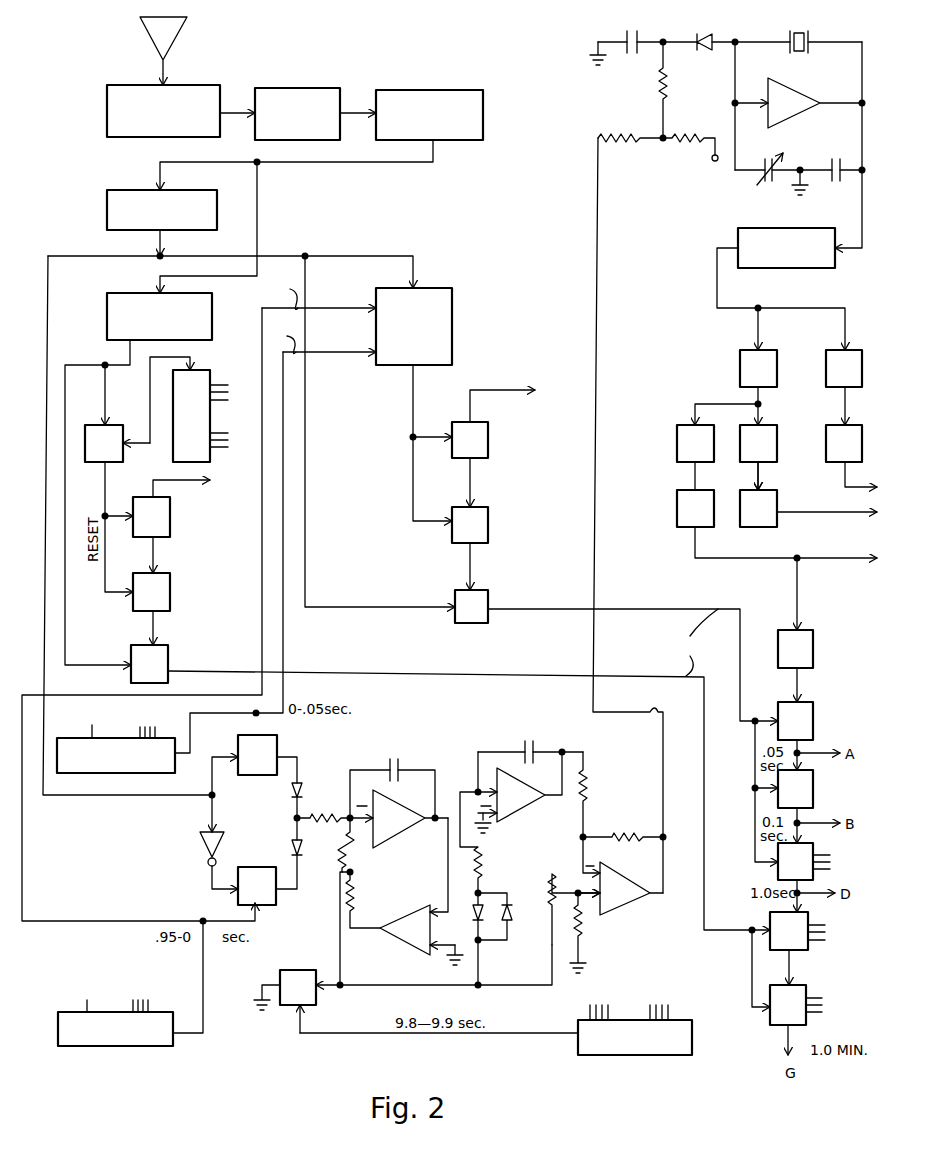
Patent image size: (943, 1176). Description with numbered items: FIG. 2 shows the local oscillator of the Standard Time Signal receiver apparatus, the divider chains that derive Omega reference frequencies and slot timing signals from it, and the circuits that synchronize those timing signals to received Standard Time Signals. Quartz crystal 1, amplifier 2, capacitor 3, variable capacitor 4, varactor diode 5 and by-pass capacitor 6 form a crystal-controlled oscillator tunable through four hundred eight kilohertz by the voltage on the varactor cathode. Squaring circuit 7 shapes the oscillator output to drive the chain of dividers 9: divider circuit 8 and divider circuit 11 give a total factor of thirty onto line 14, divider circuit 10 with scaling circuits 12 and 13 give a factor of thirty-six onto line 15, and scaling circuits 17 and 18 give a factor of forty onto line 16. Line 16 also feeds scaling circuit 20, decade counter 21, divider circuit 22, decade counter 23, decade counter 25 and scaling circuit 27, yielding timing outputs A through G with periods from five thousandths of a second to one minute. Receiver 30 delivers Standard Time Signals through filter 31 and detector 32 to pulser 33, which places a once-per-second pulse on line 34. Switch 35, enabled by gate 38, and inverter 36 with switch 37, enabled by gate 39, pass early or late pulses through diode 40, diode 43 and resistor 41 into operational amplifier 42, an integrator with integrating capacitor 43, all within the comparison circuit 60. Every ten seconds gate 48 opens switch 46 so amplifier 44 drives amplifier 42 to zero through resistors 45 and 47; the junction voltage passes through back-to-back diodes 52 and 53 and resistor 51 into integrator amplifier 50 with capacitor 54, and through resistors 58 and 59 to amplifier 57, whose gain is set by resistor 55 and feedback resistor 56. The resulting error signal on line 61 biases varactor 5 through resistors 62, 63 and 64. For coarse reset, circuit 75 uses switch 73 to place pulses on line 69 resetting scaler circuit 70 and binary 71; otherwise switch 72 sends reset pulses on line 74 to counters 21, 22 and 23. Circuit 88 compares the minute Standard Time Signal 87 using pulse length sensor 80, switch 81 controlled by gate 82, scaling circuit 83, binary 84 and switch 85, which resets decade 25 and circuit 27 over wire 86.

The quartz crystal 1 is at (805, 45).
The amplifier 2 is at (798, 100).
The capacitor 3 is at (835, 163).
The variable capacitor 4 is at (763, 160).
The varactor diode 5 is at (705, 54).
The capacitor 6 is at (638, 56).
The squaring circuit 7 is at (757, 232).
The divider circuit 8 is at (862, 357).
The chain of dividers 9 is at (725, 384).
The divider circuit 10 is at (768, 355).
The divider circuit 11 is at (862, 430).
The scaling circuit 12 is at (768, 430).
The scaling circuit 13 is at (764, 497).
The line 14 is at (846, 484).
The line 15 is at (812, 514).
The line 16 is at (797, 580).
The scaling circuit 17 is at (680, 433).
The scaling circuit 18 is at (680, 500).
The scaling circuit 20 is at (813, 636).
The decade counter 21 is at (813, 712).
The divider circuit 22 is at (813, 783).
The decade counter 23 is at (813, 852).
The decade counter 25 is at (808, 922).
The scaling circuit 27 is at (806, 990).
The receiver 30 is at (108, 113).
The filter 31 is at (331, 92).
The detector 32 is at (455, 97).
The pulser 33 is at (112, 192).
The line 34 is at (381, 258).
The switch 35 is at (272, 748).
The inverter 36 is at (220, 848).
The switch 37 is at (240, 903).
The gate 38 is at (72, 720).
The gate 39 is at (62, 1034).
The diode 40 is at (303, 788).
The resistor 41 is at (324, 815).
The operational amplifier 42 is at (392, 810).
The diode and integrating capacitor 43 is at (303, 856).
The amplifier 44 is at (410, 942).
The resistor 45 is at (356, 905).
The switch 46 is at (310, 978).
The resistor 47 is at (358, 845).
The gate 48 is at (664, 1056).
The amplifier 50 is at (536, 808).
The resistor 51 is at (482, 858).
The diode 52 is at (510, 925).
The diode 53 is at (474, 914).
The capacitor 54 is at (532, 750).
The resistor 55 is at (588, 780).
The feedback resistor 56 is at (628, 836).
The amplifier 57 is at (638, 905).
The resistor 58 is at (548, 922).
The resistor 59 is at (586, 940).
The phase comparison circuit 60 is at (414, 861).
The line 61 is at (598, 228).
The resistor 62 is at (618, 130).
The resistor 63 is at (668, 92).
The resistor 64 is at (706, 116).
The line 69 is at (414, 418).
The scaler circuit 70 is at (488, 448).
The binary 71 is at (488, 528).
The switch 72 is at (476, 623).
The switch 73 is at (452, 298).
The line 74 is at (653, 611).
The circuit 75 is at (462, 503).
The pulse length sensor 80 is at (108, 306).
The switch 81 is at (100, 462).
The gate 82 is at (200, 376).
The scaling circuit 83 is at (170, 512).
The binary 84 is at (170, 595).
The switch 85 is at (168, 653).
The wire 86 is at (519, 676).
The Standard Time Signal 87 is at (66, 624).
The circuit 88 is at (119, 382).